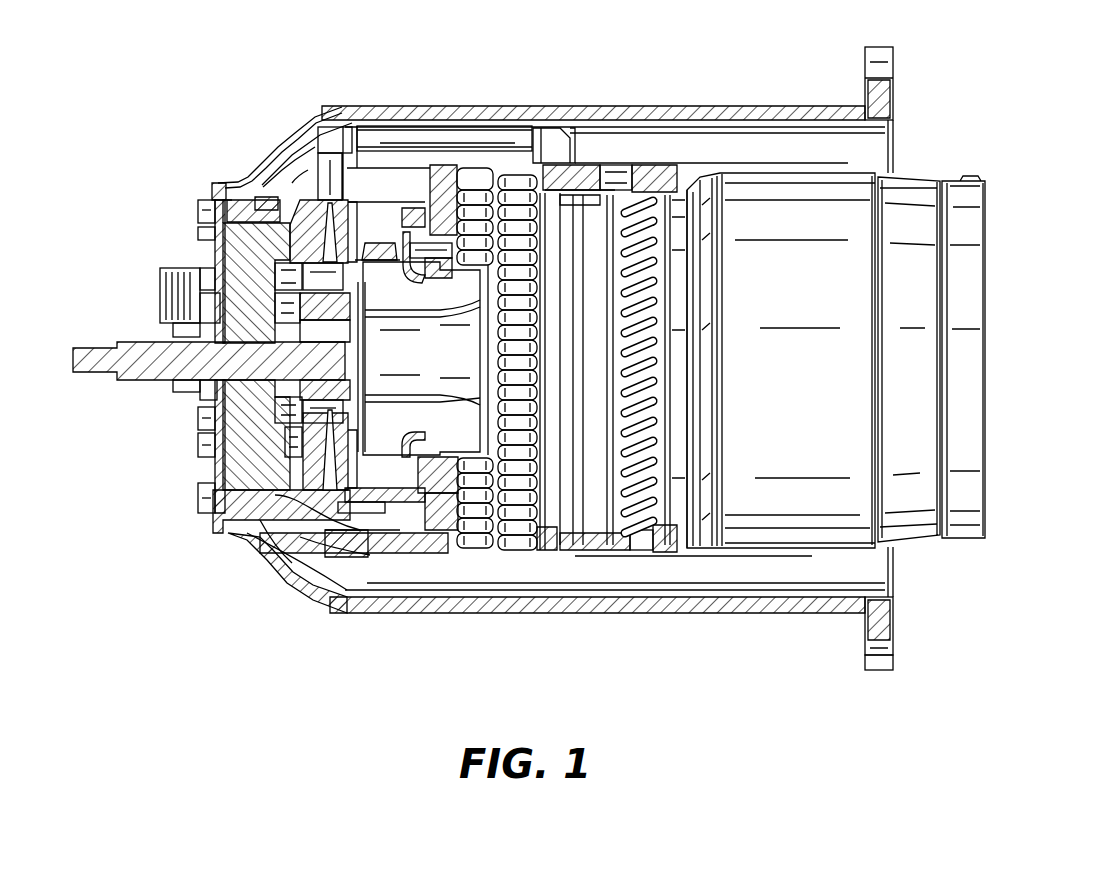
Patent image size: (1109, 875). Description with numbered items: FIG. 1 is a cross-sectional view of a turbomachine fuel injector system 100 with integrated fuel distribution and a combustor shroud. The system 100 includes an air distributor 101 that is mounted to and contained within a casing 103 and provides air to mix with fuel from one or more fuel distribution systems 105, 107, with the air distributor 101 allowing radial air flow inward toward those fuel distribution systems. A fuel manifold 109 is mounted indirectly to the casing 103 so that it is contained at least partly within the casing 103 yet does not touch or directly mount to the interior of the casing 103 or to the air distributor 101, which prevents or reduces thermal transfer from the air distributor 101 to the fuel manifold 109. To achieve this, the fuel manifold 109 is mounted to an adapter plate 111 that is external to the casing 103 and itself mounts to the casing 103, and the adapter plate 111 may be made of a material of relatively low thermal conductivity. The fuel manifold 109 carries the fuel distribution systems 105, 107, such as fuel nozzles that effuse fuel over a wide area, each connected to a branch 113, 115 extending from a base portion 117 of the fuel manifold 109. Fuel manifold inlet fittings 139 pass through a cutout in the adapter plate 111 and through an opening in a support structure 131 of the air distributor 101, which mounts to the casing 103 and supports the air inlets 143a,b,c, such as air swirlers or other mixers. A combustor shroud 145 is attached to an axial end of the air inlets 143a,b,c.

The turbomachine fuel injector system 100 is at (283, 115).
The air distributor 101 is at (416, 566).
The casing 103 is at (580, 114).
The fuel distribution system 105 is at (468, 264).
The fuel distribution system 107 is at (578, 176).
The fuel manifold 109 is at (232, 468).
The adapter plate 111 is at (215, 185).
The branch 113 is at (370, 503).
The branch 115 is at (468, 140).
The base portion 117 is at (325, 303).
The support structure 131 is at (378, 186).
The fuel manifold inlet fittings 139 is at (165, 290).
The air inlets 143a,b,c is at (637, 545).
The combustor shroud 145 is at (757, 174).